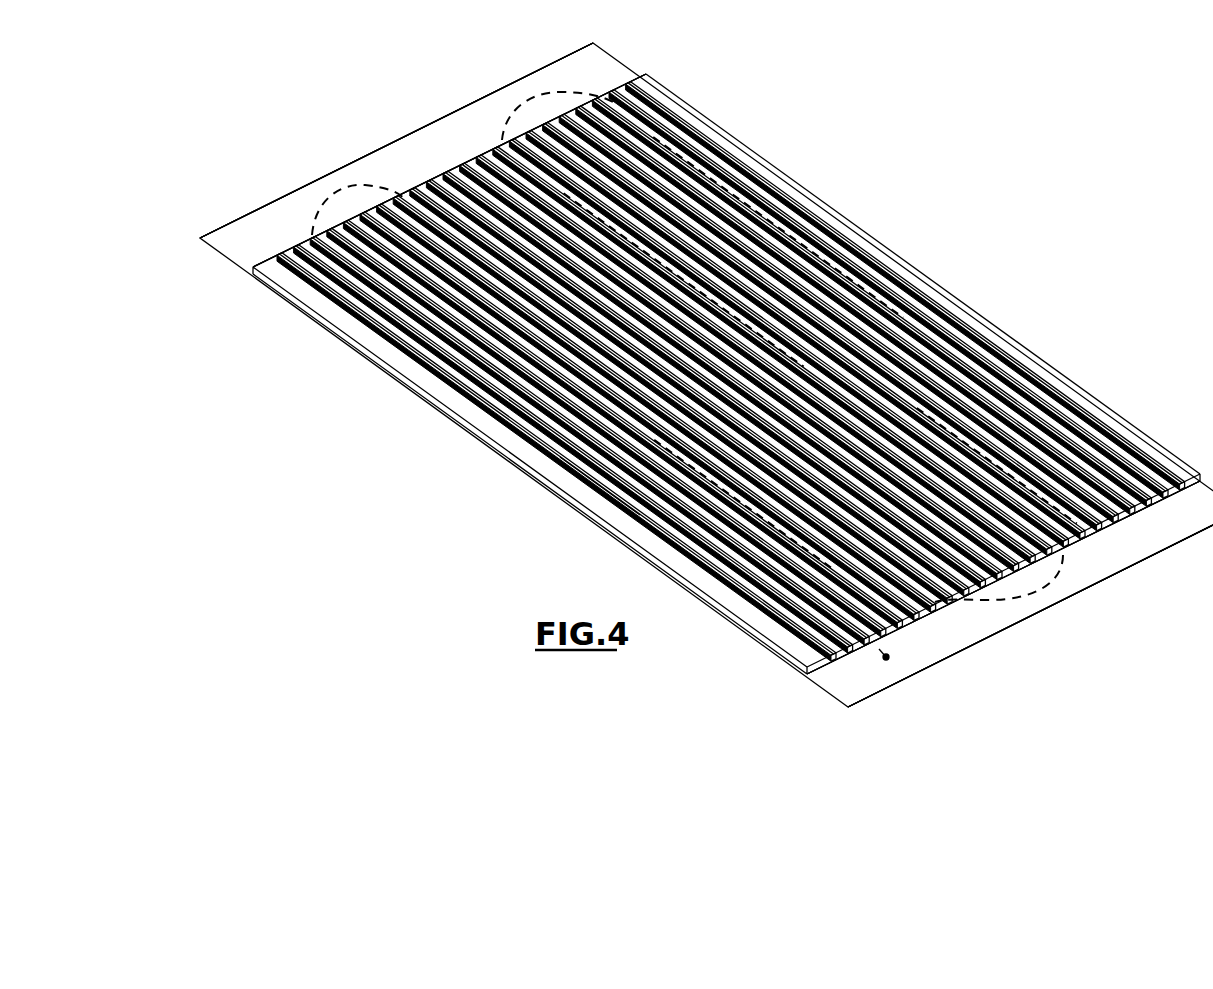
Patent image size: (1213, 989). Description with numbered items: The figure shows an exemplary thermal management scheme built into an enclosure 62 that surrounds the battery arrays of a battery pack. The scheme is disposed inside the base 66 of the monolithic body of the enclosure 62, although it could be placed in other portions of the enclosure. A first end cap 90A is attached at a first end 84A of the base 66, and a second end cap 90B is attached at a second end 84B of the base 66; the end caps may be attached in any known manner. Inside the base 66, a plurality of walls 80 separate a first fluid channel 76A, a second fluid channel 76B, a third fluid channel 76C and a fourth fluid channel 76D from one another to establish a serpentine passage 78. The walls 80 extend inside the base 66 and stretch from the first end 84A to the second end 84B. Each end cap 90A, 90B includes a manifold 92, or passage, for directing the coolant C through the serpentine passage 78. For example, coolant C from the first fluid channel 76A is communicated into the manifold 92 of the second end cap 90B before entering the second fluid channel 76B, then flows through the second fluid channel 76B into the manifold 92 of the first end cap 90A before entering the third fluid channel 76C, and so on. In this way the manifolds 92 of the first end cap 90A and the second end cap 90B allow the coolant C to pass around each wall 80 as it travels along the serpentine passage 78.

The enclosure 62 is at (689, 395).
The base 66 is at (689, 395).
The first fluid channel 76A is at (518, 414).
The second fluid channel 76B is at (938, 607).
The third fluid channel 76C is at (632, 203).
The fourth fluid channel 76D is at (810, 230).
The serpentine passage 78 is at (492, 172).
The walls 80 is at (380, 250).
The first end of the base 84A is at (828, 683).
The second end of the base 84B is at (242, 252).
The first end cap 90A is at (1018, 625).
The second end cap 90B is at (428, 115).
The manifold 92 is at (387, 165).
The coolant C is at (612, 465).